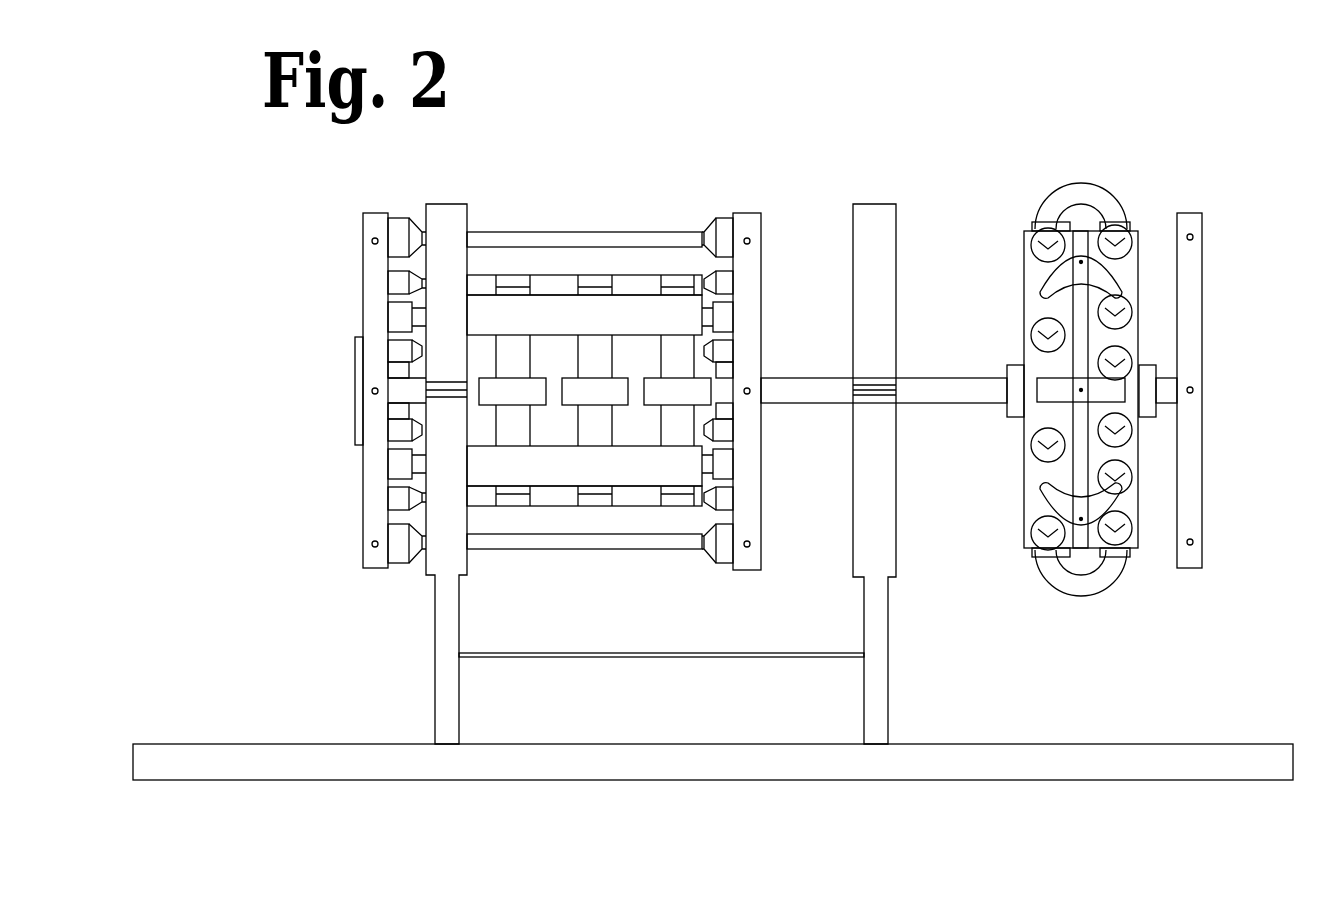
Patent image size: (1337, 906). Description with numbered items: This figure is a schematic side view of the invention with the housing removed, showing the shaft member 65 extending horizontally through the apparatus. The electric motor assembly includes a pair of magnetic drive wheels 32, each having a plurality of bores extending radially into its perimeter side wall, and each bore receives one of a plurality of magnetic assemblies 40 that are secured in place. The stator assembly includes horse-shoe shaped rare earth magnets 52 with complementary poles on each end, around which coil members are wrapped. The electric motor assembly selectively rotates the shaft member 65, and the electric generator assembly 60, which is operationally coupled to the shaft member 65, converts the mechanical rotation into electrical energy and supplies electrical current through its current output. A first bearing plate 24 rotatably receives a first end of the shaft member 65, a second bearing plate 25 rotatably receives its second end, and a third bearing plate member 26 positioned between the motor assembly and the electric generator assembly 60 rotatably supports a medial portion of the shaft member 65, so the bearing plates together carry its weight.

The first bearing plate 24 is at (1190, 482).
The second bearing plate 25 is at (377, 522).
The third bearing plate member 26 is at (890, 477).
The magnetic drive wheel 32 is at (1020, 256).
The magnetic assembly 40 is at (1138, 307).
The rare earth magnet 52 is at (1080, 190).
The electric generator assembly 60 is at (630, 212).
The shaft member 65 is at (958, 378).